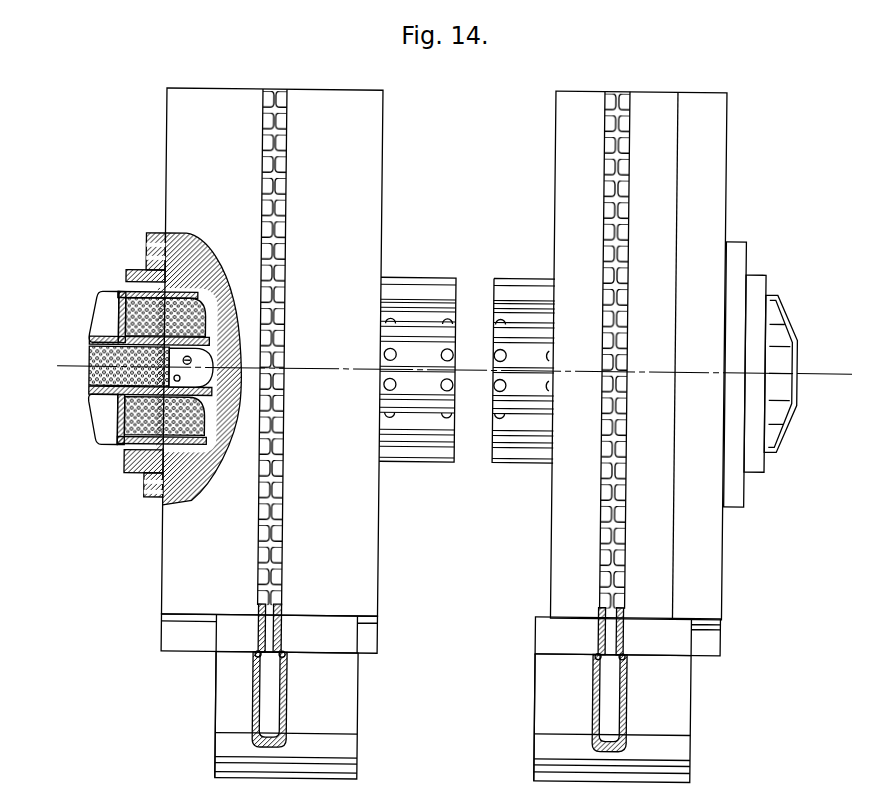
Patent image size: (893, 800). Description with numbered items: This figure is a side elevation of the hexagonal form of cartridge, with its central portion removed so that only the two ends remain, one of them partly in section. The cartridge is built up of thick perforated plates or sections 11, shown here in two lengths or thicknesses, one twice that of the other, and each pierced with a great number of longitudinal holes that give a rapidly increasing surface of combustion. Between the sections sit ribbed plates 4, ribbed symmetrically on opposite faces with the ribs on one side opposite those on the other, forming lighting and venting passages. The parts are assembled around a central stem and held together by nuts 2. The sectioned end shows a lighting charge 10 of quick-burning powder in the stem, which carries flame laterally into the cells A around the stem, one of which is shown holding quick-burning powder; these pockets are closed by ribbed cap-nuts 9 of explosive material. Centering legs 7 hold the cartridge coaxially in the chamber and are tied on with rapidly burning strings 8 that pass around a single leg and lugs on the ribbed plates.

The nut 2 is at (150, 240).
The ribbed plate 4 is at (283, 88).
The centering leg 7 is at (541, 687).
The string 8 is at (626, 700).
The ribbed cap-nut 9 is at (97, 318).
The lighting charge 10 is at (92, 372).
The thick plate or section 11 is at (218, 88).
The cell A is at (132, 297).